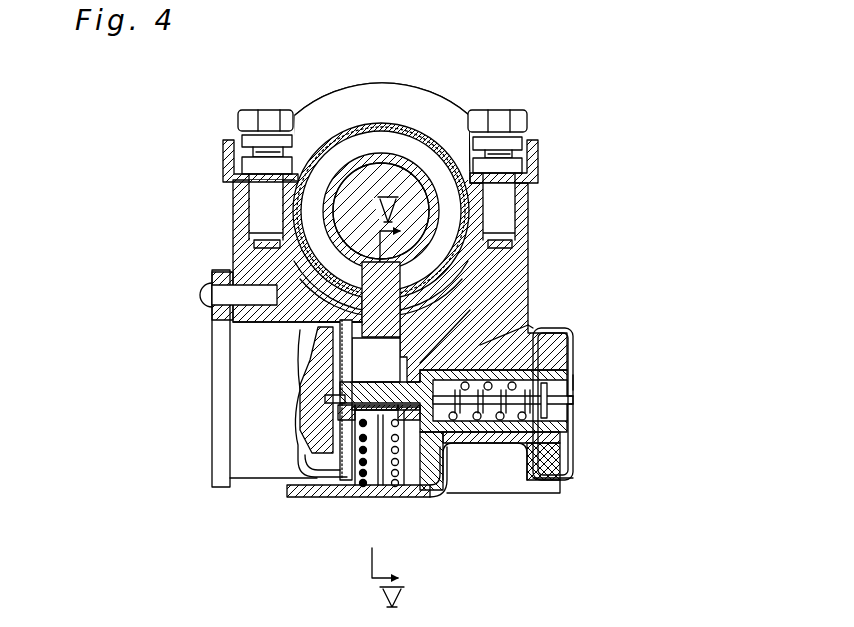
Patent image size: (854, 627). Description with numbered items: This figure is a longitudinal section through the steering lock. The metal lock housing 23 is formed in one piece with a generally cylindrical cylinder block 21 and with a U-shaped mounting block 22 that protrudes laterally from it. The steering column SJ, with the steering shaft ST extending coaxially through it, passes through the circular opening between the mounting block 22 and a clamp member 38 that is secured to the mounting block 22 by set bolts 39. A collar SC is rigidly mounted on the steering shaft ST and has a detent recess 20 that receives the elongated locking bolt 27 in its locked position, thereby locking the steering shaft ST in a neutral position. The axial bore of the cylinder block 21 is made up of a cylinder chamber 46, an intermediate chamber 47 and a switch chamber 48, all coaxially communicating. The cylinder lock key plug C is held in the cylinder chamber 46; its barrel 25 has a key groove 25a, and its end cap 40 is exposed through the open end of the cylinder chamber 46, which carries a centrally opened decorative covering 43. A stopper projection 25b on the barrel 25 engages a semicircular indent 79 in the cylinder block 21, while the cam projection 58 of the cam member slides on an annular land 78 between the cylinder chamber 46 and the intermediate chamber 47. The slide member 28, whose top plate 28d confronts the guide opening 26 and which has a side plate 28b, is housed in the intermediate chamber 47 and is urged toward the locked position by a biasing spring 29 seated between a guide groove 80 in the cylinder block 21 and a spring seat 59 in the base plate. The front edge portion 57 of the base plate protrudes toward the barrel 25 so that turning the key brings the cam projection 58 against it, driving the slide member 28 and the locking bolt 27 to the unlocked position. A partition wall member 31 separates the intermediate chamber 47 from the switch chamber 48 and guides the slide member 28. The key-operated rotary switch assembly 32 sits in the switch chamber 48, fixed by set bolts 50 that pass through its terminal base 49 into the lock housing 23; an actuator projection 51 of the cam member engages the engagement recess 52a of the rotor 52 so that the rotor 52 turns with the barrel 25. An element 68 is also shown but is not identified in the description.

The detent recess 20 is at (495, 232).
The cylinder block 21 is at (505, 468).
The mounting block 22 is at (290, 205).
The lock housing 23 is at (537, 265).
The barrel 25 is at (572, 445).
The key groove 25a is at (570, 404).
The stopper projection 25b is at (503, 436).
The guide opening 26 is at (363, 300).
The locking bolt 27 is at (290, 253).
The slide member 28 is at (405, 447).
The side plate 28b is at (367, 371).
The top plate 28d is at (318, 327).
The biasing spring 29 is at (395, 475).
The partition wall member 31 is at (323, 490).
The rotary switch assembly 32 is at (260, 458).
The clamp member 38 is at (372, 123).
The set bolts 39 is at (268, 112).
The end cap 40 is at (568, 424).
The decorative covering 43 is at (577, 340).
The cylinder chamber 46 is at (555, 330).
The intermediate chamber 47 is at (375, 488).
The switch chamber 48 is at (240, 318).
The terminal base 49 is at (213, 360).
The set bolts 50 is at (200, 295).
The actuator projection 51 is at (340, 398).
The rotor 52 is at (300, 470).
The engagement recess 52a is at (300, 413).
The front edge portion 57 is at (410, 445).
The cam projection 58 is at (425, 360).
The spring seat 59 is at (388, 486).
The return spring 68 is at (572, 412).
The annular land 78 is at (470, 365).
The semicircular indent 79 is at (565, 475).
The guide groove 80 is at (367, 487).
The cylinder lock key plug C is at (582, 380).
The steering column SJ is at (345, 130).
The collar SC is at (393, 158).
The steering shaft ST is at (410, 185).